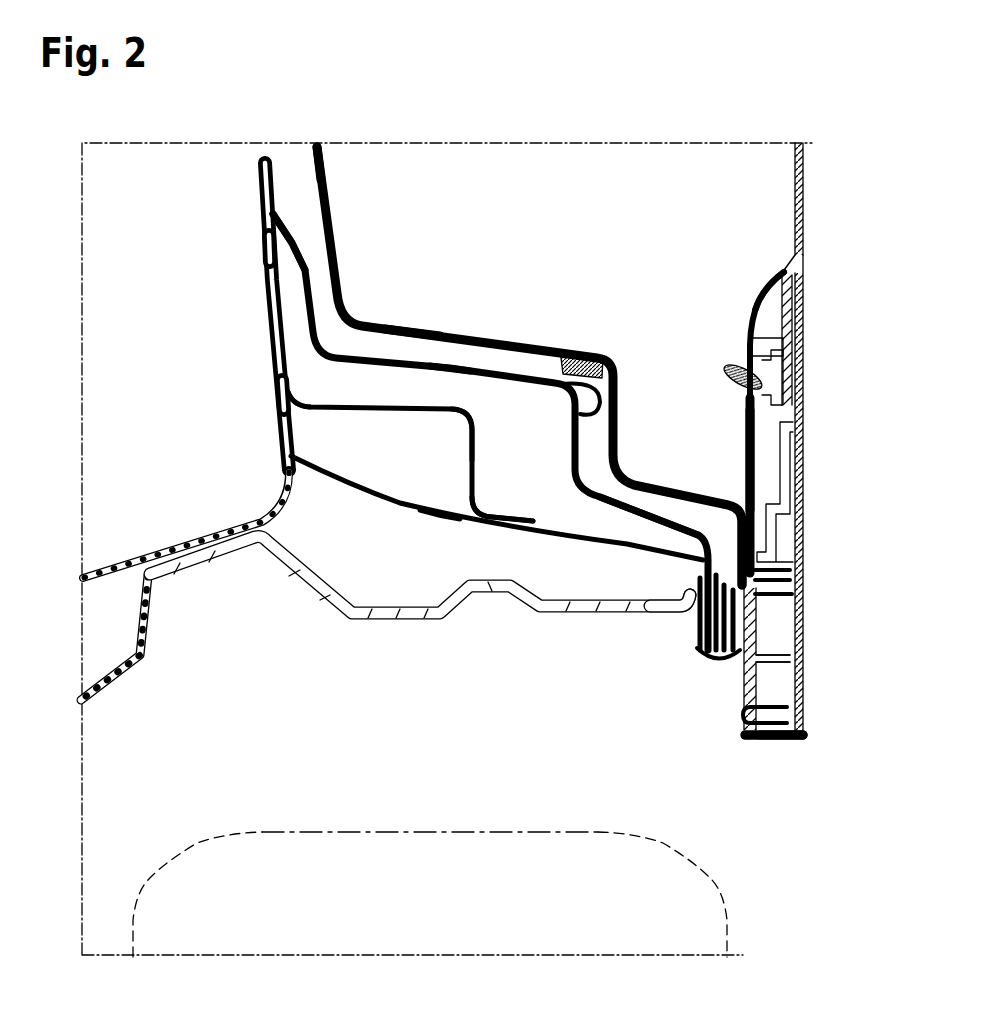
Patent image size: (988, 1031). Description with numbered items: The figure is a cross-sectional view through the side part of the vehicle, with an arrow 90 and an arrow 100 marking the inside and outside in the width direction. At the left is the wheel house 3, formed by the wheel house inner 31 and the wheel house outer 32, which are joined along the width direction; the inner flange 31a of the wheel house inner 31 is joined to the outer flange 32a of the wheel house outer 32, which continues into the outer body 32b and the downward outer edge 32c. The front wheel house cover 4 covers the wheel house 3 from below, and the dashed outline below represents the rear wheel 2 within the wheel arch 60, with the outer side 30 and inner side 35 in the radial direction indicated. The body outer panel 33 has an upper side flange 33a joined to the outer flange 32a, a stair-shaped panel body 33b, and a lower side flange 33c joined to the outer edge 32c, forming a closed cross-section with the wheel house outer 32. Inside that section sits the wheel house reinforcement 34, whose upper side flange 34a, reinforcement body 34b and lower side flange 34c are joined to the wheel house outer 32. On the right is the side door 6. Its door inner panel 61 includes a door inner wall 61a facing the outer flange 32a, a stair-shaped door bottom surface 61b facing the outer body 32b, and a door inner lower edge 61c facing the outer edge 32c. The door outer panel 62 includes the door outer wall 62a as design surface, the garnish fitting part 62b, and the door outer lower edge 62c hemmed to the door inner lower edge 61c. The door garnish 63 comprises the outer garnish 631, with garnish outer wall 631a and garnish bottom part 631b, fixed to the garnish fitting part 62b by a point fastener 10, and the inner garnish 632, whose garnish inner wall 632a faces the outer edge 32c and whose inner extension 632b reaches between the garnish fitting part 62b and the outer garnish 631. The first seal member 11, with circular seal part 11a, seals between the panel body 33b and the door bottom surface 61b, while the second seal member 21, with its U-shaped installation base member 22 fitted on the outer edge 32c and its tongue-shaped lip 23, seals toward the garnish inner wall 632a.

The rear wheel 2 is at (727, 913).
The wheel house 3 is at (393, 390).
The front wheel house cover 4 is at (143, 653).
The side door 6 is at (592, 479).
The point fastener 10 is at (727, 370).
The first seal member 11 is at (563, 360).
The seal part 11a is at (598, 410).
The second seal member 21 is at (707, 662).
The installation base member 22 is at (700, 635).
The lip 23 is at (748, 683).
The outer side in the radial direction 30 is at (844, 834).
The wheel house inner 31 is at (274, 497).
The inner flange 31a is at (276, 397).
The wheel house outer 32 is at (402, 508).
The outer flange 32a is at (261, 245).
The outer body 32b is at (445, 500).
The outer edge 32c is at (665, 600).
The body outer panel 33 is at (521, 384).
The upper side flange 33a is at (301, 254).
The panel body 33b is at (447, 372).
The lower side flange 33c is at (680, 542).
The wheel house reinforcement 34 is at (372, 413).
The upper side flange 34a is at (287, 313).
The reinforcement body 34b is at (468, 438).
The lower side flange 34c is at (517, 517).
The inner side in the radial direction 35 is at (840, 882).
The wheel arch 60 is at (782, 745).
The door inner panel 61 is at (337, 238).
The door inner wall 61a is at (325, 160).
The door bottom surface 61b is at (413, 324).
The door inner lower edge 61c is at (737, 505).
The door outer panel 62 is at (794, 190).
The door outer wall 62a is at (806, 215).
The garnish fitting part 62b is at (749, 400).
The door outer lower edge 62c is at (797, 597).
The door garnish 63 is at (801, 742).
The outer garnish 631 is at (780, 544).
The garnish outer wall 631a is at (805, 380).
The garnish bottom part 631b is at (770, 745).
The inner garnish 632 is at (724, 591).
The garnish inner wall 632a is at (740, 702).
The inner extension 632b is at (772, 490).
The arrow illustrating inside in the width direction 90 is at (382, 112).
The arrow illustrating outside in the width direction 100 is at (430, 108).